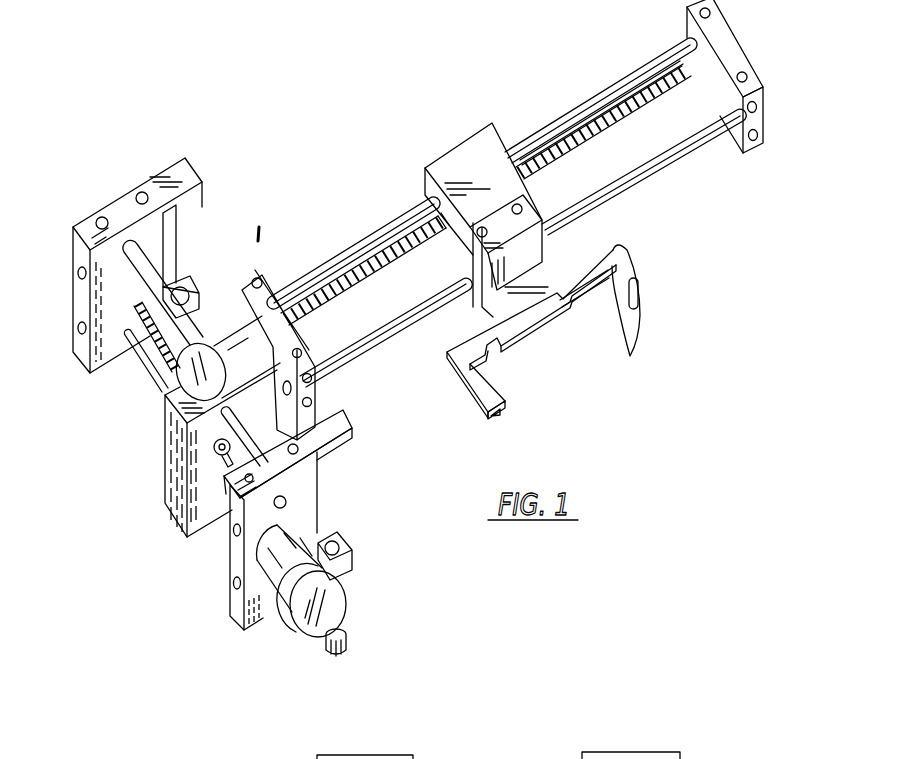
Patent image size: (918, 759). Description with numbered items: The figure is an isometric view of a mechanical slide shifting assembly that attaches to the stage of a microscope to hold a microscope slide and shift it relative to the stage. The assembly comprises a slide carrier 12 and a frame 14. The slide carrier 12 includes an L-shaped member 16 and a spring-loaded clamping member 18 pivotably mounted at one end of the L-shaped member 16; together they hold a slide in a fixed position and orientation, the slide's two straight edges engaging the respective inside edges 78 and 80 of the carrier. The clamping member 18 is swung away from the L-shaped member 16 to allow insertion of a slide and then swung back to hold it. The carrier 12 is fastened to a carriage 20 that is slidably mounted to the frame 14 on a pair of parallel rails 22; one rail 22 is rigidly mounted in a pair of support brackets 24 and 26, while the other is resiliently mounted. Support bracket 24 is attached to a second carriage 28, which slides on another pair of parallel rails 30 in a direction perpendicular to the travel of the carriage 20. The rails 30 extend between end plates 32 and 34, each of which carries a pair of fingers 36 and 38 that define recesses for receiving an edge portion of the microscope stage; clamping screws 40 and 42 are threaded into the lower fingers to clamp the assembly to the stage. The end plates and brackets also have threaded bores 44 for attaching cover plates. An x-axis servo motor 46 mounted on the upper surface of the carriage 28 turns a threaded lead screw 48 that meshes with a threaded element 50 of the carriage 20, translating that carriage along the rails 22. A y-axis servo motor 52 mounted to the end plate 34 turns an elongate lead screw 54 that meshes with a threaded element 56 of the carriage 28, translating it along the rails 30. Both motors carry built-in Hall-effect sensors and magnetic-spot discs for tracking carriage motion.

The slide carrier 12 is at (447, 383).
The frame 14 is at (260, 227).
The L-shaped member 16 is at (498, 336).
The spring-loaded clamping member 18 is at (641, 337).
The carriage 20 is at (487, 152).
The parallel rails 22 is at (656, 158).
The support bracket 24 is at (290, 335).
The support bracket 26 is at (736, 133).
The carriage 28 is at (177, 498).
The parallel rails 30 is at (147, 282).
The end plate 32 is at (122, 212).
The end plate 34 is at (265, 622).
The fingers 36 is at (176, 280).
The fingers 38 is at (341, 452).
The clamping screw 40 is at (192, 322).
The clamping screw 42 is at (348, 638).
The threaded bores 44 is at (80, 327).
The x-axis servo motor 46 is at (187, 380).
The threaded lead screw 48 is at (411, 253).
The threaded element 50 is at (427, 200).
The y-axis servo motor 52 is at (309, 635).
The threaded lead screw 54 is at (195, 380).
The threaded element 56 is at (214, 446).
The inside edge 78 is at (590, 284).
The inside edge 80 is at (503, 403).